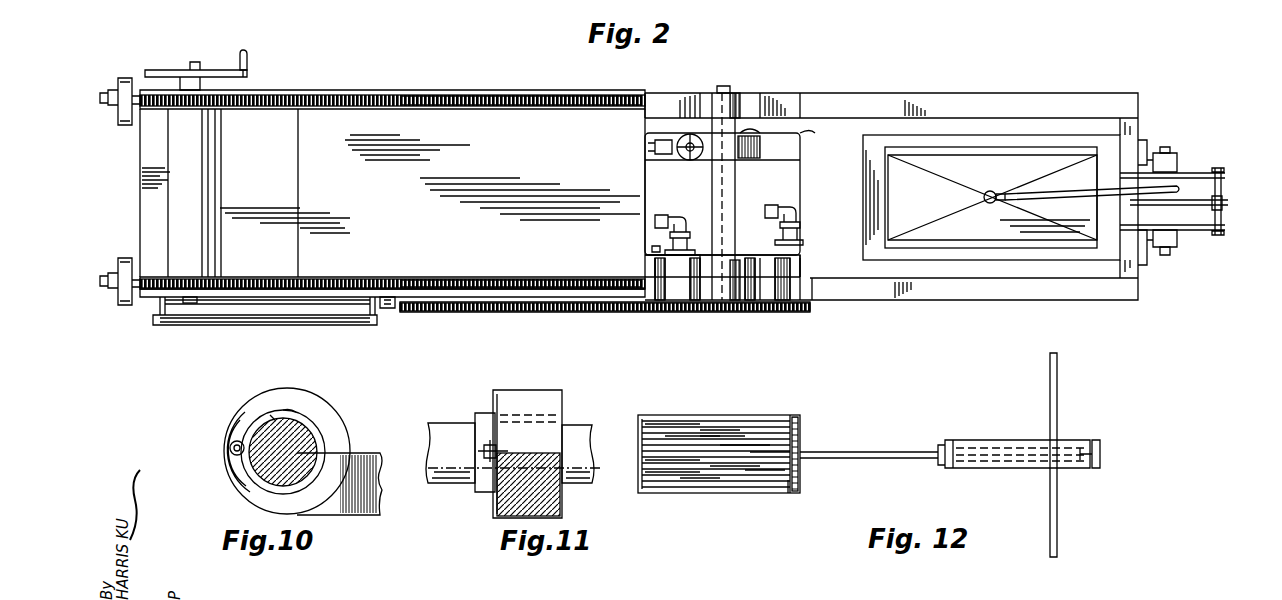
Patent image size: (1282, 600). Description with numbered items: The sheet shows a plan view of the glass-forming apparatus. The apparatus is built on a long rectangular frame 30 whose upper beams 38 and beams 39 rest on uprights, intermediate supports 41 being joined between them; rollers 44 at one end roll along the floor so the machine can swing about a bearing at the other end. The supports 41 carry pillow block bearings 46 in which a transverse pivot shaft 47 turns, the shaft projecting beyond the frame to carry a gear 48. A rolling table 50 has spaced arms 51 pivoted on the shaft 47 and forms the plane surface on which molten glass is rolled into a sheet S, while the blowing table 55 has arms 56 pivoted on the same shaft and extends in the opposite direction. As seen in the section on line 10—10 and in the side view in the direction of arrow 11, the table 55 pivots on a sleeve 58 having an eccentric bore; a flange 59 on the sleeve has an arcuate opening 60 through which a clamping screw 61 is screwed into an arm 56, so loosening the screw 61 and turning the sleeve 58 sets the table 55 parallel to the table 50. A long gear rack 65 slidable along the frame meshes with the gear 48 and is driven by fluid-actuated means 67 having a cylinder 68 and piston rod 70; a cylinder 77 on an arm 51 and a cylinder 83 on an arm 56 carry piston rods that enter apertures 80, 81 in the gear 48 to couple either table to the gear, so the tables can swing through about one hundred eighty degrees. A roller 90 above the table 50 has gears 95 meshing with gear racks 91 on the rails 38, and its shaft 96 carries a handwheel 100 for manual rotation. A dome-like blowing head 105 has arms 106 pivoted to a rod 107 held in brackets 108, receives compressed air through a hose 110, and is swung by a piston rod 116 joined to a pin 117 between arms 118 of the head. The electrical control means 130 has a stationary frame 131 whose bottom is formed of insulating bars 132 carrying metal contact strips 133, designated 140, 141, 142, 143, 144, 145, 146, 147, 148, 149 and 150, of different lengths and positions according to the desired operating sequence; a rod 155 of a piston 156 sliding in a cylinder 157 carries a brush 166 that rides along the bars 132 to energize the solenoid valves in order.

In FIG. 2, the frame 30 is at (1019, 88).
In FIG. 2, the upper longitudinal bars or beams 38 is at (866, 300).
In FIG. 2, the beams 39 is at (518, 95).
In FIG. 2, the intermediate supports 41 is at (778, 95).
In FIG. 2, the rollers 44 is at (122, 88).
In FIG. 2, the pillow block bearings 46 is at (738, 94).
In FIG. 2, the transverse pivot shaft 47 is at (722, 86).
In FIG. 10, the transverse pivot shaft 47 is at (300, 418).
In FIG. 11, the transverse pivot shaft 47 is at (452, 422).
In FIG. 2, the gear 48 is at (722, 313).
In FIG. 2, the rolling table 50 is at (462, 159).
In FIG. 2, the arms of rolling table 51 is at (665, 112).
In FIG. 2, the molding or blowing table 55 is at (936, 118).
In FIG. 2, the arms of blowing table 56 is at (790, 137).
In FIG. 10, the arms of blowing table 56 is at (350, 515).
In FIG. 11, the arms of blowing table 56 is at (505, 516).
In FIG. 2, the sleeve 58 is at (712, 188).
In FIG. 10, the sleeve 58 is at (324, 424).
In FIG. 11, the sleeve 58 is at (480, 493).
In FIG. 10, the flange 59 is at (276, 396).
In FIG. 11, the flange 59 is at (494, 392).
In FIG. 10, the arcuate opening 60 is at (248, 485).
In FIG. 10, the clamping screw 61 is at (230, 449).
In FIG. 11, the clamping screw 61 is at (478, 452).
In FIG. 2, the gear rack 65 is at (522, 312).
In FIG. 2, the fluid-actuated means 67 is at (236, 327).
In FIG. 2, the cylinder 68 is at (301, 325).
In FIG. 2, the piston rod 70 is at (387, 309).
In FIG. 2, the cylinder 77 is at (680, 236).
In FIG. 2, the aperture 80 is at (650, 313).
In FIG. 2, the aperture 81 is at (784, 313).
In FIG. 2, the cylinder 83 is at (796, 267).
In FIG. 2, the roller 90 is at (221, 152).
In FIG. 2, the gear racks 91 is at (467, 95).
In FIG. 2, the gears 95 is at (206, 94).
In FIG. 2, the roller shaft 96 is at (190, 303).
In FIG. 2, the handwheel 100 is at (190, 70).
In FIG. 2, the blowing head 105 is at (906, 207).
In FIG. 2, the arms of blowing head 106 is at (1143, 160).
In FIG. 2, the rod 107 is at (1170, 147).
In FIG. 2, the brackets 108 is at (1180, 158).
In FIG. 2, the hose 110 is at (998, 192).
In FIG. 2, the piston rod 116 is at (1224, 205).
In FIG. 2, the pin 117 is at (1222, 188).
In FIG. 2, the arms of head 118 is at (1224, 172).
In FIG. 2, the glass sheet S is at (862, 173).
In FIG. 2, the section line 10— 10 is at (757, 164).
In FIG. 10, the arrow 11 is at (382, 433).
In FIG. 12, the electrical control means 130 is at (740, 494).
In FIG. 12, the stationary rectangular frame 131 is at (650, 494).
In FIG. 12, the bars of insulation material 132 is at (712, 436).
In FIG. 12, the metal contact strips 133 is at (697, 494).
In FIG. 12, the contact strip 140 is at (794, 418).
In FIG. 12, the contact strip 141 is at (648, 424).
In FIG. 12, the contact strip 142 is at (800, 431).
In FIG. 12, the contact strip 143 is at (728, 446).
In FIG. 12, the contact strip 144 is at (752, 452).
In FIG. 12, the contact strip 145 is at (668, 438).
In FIG. 12, the contact strip 146 is at (755, 470).
In FIG. 12, the contact strip 147 is at (650, 460).
In FIG. 12, the contact strip 148 is at (712, 468).
In FIG. 12, the contact strip 149 is at (652, 472).
In FIG. 12, the contact strip 150 is at (688, 480).
In FIG. 12, the piston rod 155 is at (870, 452).
In FIG. 12, the piston 156 is at (1080, 470).
In FIG. 12, the cylinder 157 is at (976, 468).
In FIG. 12, the brush 166 is at (798, 484).